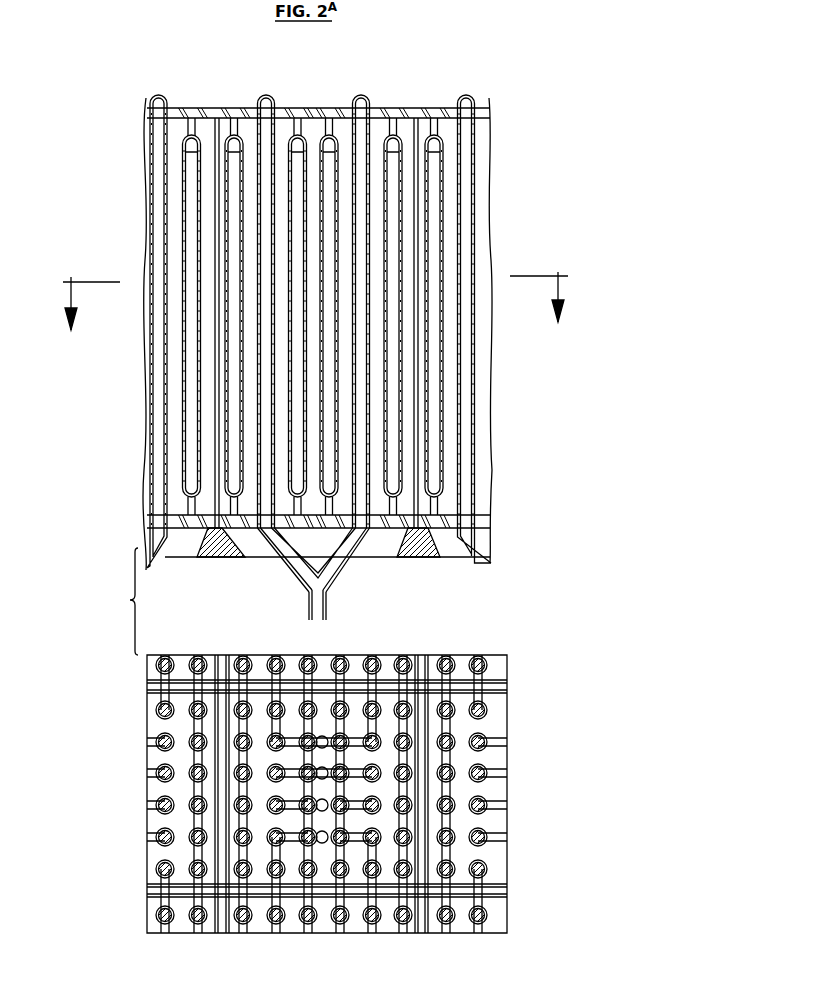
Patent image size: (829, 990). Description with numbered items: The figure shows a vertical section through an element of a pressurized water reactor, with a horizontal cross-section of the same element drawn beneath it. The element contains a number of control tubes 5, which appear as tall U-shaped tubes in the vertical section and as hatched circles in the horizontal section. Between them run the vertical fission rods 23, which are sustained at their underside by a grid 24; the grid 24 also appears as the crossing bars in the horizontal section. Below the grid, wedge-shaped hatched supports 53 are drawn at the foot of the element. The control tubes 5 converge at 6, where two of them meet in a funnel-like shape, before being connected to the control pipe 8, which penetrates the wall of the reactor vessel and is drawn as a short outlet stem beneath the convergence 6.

The control tube 5 is at (474, 152).
The vertical fission rod 23 is at (437, 190).
The grid 24 is at (448, 520).
The support wedge 53 is at (425, 553).
The convergence of the control tubes 6 is at (290, 566).
The control pipe 8 is at (308, 602).